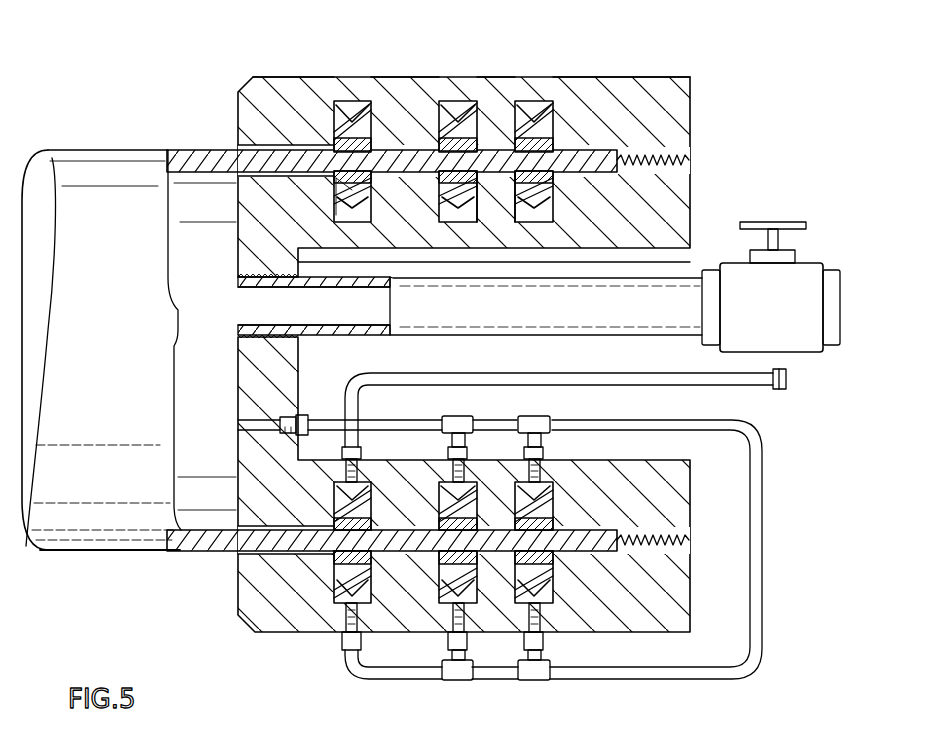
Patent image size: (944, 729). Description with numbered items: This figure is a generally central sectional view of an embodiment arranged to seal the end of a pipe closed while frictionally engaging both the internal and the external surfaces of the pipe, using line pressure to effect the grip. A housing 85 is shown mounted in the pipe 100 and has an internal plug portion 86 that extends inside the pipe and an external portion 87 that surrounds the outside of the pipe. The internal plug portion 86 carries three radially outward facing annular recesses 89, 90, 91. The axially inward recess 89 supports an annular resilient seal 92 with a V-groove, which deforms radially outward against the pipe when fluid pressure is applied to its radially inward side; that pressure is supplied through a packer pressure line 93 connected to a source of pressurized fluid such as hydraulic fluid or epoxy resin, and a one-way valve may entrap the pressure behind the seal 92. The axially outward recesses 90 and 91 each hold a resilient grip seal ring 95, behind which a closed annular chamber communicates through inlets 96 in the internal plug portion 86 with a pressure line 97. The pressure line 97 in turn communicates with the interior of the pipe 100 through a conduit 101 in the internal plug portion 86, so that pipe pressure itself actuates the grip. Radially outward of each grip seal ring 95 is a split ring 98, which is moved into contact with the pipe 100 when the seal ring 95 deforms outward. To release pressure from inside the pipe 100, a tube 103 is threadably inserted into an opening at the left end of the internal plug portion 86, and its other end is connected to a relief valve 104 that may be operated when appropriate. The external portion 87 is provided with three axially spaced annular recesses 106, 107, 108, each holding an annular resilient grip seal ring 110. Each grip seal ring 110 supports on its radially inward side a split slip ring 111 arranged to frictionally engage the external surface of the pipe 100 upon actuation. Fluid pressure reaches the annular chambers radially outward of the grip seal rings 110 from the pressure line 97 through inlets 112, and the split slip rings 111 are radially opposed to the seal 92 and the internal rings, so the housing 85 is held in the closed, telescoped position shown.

The housing 85 is at (701, 167).
The internal plug portion 86 is at (690, 215).
The external portion 87 is at (690, 97).
The axially inward recess 89 is at (340, 217).
The axially outward recess 90 is at (440, 206).
The axially outward recess 91 is at (554, 206).
The annular resilient seal 92 is at (340, 188).
The packer pressure line 93 is at (757, 388).
The resilient grip seal ring 95 is at (518, 200).
The inlets 96 is at (450, 465).
The pressure line 97 is at (764, 500).
The split ring 98 is at (372, 185).
The pipe 100 is at (93, 316).
The conduit 101 is at (238, 424).
The tube 103 is at (515, 316).
The relief valve 104 is at (753, 320).
The annular recess 106 is at (340, 103).
The annular recess 107 is at (448, 112).
The annular recess 108 is at (545, 112).
The annular resilient grip seal ring 110 is at (352, 100).
The split slip rings 111 is at (275, 96).
The inlets 112 is at (345, 621).